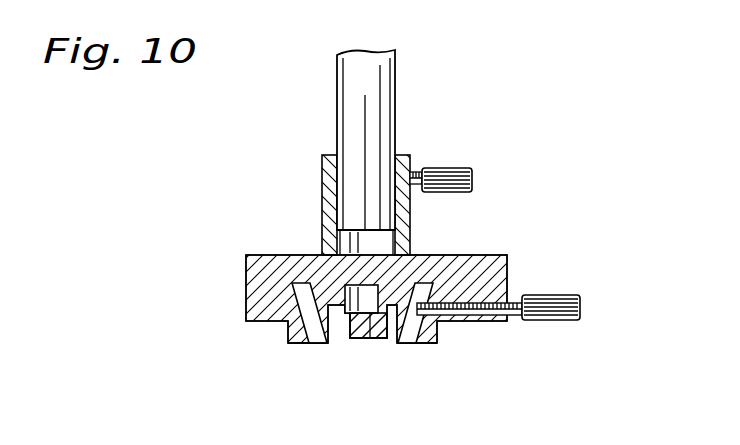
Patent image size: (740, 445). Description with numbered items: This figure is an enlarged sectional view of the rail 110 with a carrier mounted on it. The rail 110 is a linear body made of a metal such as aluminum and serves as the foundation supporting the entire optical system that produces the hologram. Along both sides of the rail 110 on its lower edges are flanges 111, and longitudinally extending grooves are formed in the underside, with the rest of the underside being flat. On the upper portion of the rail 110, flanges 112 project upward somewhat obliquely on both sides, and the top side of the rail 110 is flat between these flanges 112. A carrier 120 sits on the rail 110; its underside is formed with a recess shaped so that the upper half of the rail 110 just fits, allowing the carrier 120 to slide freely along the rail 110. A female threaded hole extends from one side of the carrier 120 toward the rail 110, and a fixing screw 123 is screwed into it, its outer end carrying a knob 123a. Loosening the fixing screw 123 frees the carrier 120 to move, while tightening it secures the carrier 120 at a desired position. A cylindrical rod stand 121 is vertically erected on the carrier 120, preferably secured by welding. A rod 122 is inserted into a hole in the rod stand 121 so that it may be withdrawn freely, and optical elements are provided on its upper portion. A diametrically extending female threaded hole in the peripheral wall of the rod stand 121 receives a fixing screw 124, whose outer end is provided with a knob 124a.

The rail 110 is at (400, 345).
The flanges 111 is at (293, 347).
The flanges 112 is at (284, 257).
The carrier 120 is at (512, 268).
The rod stand 121 is at (325, 172).
The rod 122 is at (378, 87).
The fixing screw 123 is at (512, 320).
The knob 123a is at (567, 320).
The fixing screw 124 is at (417, 172).
The knob 124a is at (475, 178).